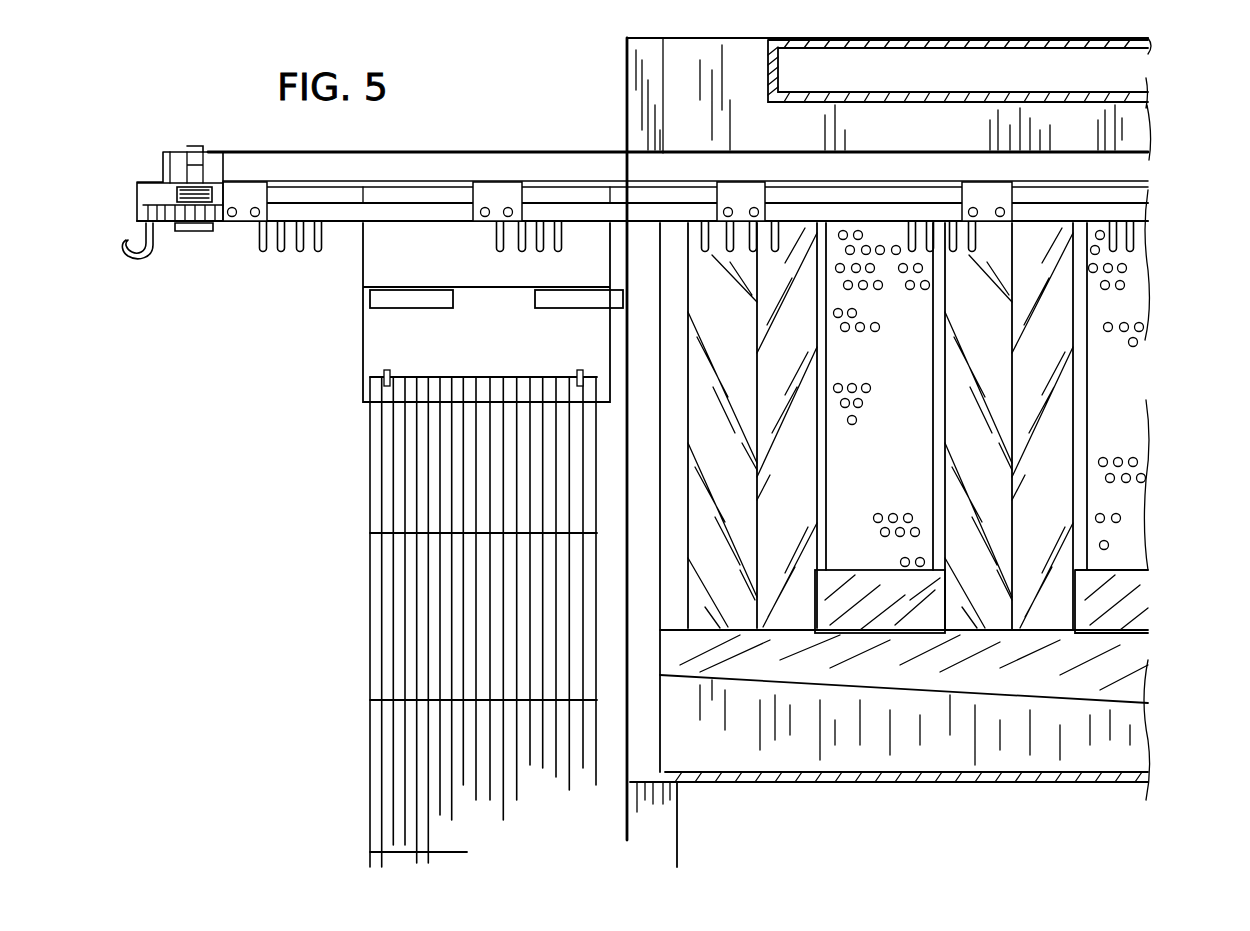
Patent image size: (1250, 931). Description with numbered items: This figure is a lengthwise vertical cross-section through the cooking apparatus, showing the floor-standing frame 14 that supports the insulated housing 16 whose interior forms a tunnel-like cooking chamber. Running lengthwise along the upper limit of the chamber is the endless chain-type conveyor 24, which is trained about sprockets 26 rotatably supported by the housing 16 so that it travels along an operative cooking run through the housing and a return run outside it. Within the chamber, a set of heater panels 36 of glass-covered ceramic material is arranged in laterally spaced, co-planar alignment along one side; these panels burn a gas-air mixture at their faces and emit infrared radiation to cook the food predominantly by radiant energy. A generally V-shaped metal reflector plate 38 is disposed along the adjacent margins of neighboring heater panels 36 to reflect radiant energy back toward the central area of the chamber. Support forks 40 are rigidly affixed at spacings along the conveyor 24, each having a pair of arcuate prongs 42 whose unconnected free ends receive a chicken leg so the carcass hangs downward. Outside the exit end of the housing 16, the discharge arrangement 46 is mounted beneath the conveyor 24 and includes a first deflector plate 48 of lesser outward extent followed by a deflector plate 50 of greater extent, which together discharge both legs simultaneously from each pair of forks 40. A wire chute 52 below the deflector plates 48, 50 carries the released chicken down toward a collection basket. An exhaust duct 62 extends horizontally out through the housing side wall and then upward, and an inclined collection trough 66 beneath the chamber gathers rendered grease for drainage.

The floor-standing frame 14 is at (660, 837).
The insulated housing 16 is at (841, 775).
The endless chain-type conveyor 24 is at (296, 185).
The sprockets 26 is at (192, 233).
The heater panels 36 is at (865, 357).
The V-shaped metal reflector plate 38 is at (970, 433).
The support forks 40 is at (496, 239).
The arcuate prongs 42 is at (127, 240).
The discharge arrangement 46 is at (387, 328).
The first deflector plate 48 is at (568, 303).
The following deflector plate 50 is at (413, 302).
The wire chute 52 is at (380, 740).
The exhaust duct 62 is at (968, 72).
The collection trough 66 is at (1124, 704).